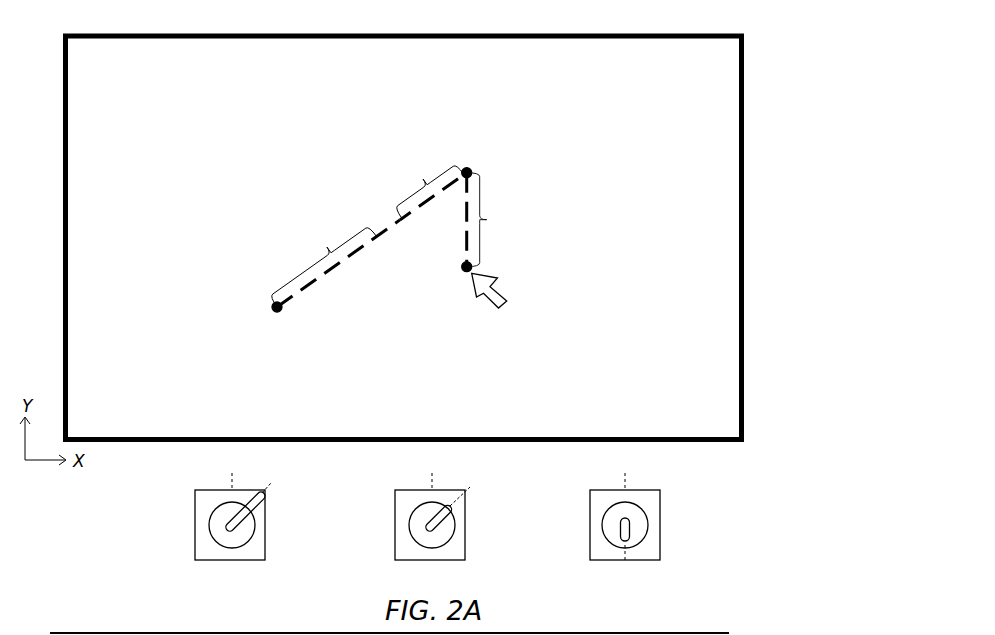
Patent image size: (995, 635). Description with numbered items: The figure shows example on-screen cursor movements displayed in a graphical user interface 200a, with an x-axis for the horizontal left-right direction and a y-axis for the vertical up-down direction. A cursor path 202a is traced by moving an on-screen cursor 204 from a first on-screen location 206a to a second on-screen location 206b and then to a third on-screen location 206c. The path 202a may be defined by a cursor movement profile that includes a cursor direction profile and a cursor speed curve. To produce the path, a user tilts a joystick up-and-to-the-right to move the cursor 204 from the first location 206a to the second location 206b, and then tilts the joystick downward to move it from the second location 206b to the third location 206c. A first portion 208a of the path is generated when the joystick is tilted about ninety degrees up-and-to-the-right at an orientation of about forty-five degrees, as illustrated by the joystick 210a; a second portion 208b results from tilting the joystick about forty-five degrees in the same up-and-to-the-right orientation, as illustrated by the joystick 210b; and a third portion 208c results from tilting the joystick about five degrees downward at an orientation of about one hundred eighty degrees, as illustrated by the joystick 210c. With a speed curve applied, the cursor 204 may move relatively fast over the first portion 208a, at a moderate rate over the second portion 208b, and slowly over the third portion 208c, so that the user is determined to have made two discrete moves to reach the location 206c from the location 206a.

The graphical user interface 200a is at (758, 97).
The cursor path 202a is at (447, 362).
The on-screen cursor 204 is at (473, 310).
The first on-screen location 206a is at (283, 317).
The second on-screen location 206b is at (471, 167).
The third on-screen location 206c is at (460, 274).
The first portion of the path 208a is at (332, 263).
The second portion of the path 208b is at (418, 189).
The third portion of the path 208c is at (505, 220).
The joystick 210a is at (191, 537).
The joystick 210b is at (391, 537).
The joystick 210c is at (587, 538).